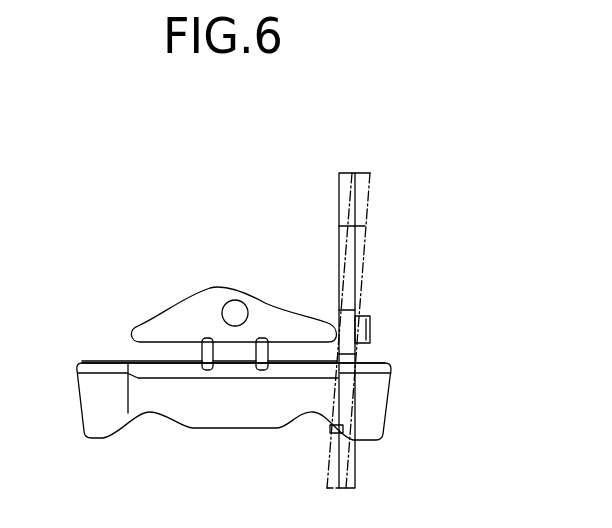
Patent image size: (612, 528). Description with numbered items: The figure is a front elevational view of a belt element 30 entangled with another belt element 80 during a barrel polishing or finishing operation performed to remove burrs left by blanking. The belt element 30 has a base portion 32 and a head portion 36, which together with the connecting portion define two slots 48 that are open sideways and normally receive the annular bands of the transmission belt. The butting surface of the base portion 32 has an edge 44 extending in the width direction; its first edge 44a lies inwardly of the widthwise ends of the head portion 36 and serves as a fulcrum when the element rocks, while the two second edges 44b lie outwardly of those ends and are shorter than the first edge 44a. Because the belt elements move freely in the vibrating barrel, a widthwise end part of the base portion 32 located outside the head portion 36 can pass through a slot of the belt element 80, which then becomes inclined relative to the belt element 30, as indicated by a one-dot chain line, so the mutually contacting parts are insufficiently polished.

The belt element 30 is at (160, 260).
The base portion 32 is at (157, 448).
The head portion 36 is at (146, 318).
The edge 44 is at (269, 386).
The first edge 44a is at (234, 381).
The second edge 44b is at (373, 374).
The slot 48 is at (130, 349).
The belt element 80 is at (340, 168).